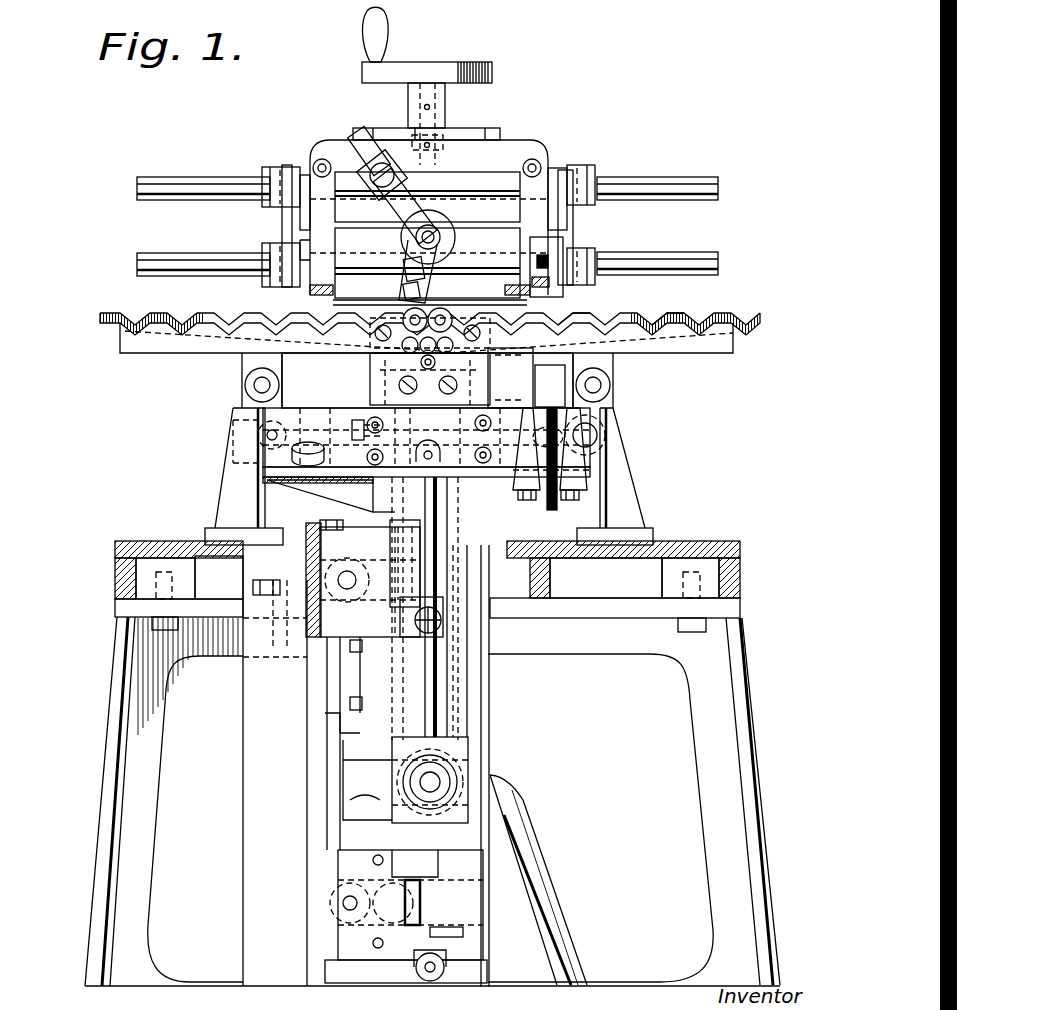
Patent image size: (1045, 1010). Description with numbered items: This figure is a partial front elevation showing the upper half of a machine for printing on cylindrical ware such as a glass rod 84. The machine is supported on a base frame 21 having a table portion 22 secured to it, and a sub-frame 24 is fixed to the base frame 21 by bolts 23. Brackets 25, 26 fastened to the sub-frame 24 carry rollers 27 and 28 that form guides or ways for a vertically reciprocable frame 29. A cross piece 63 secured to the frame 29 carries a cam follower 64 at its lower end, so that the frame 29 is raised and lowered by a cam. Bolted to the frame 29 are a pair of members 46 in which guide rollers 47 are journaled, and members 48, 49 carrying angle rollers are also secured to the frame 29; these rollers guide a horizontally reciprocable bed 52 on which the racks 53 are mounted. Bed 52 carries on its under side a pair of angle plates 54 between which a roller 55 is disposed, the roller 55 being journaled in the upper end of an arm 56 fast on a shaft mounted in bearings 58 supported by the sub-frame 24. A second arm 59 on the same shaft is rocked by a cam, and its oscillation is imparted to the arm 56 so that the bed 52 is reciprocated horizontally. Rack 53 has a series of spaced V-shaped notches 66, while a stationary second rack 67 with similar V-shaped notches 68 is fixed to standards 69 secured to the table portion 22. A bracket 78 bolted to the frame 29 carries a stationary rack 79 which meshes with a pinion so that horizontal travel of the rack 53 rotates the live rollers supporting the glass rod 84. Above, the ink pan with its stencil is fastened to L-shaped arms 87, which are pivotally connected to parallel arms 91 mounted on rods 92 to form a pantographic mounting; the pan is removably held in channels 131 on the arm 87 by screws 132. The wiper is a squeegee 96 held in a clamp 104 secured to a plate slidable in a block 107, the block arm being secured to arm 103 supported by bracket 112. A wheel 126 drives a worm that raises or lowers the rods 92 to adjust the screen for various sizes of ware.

The base frame 21 is at (755, 714).
The table portion 22 is at (712, 545).
The bolts 23 is at (278, 590).
The sub-frame 24 is at (248, 920).
The bracket 25 is at (347, 635).
The bracket 26 is at (333, 940).
The roller 27 is at (340, 592).
The roller 28 is at (420, 907).
The vertically reciprocable frame 29 is at (488, 707).
The members 46 is at (263, 458).
The guide rollers 47 is at (258, 434).
The member 48 is at (537, 503).
The member 49 is at (300, 476).
The horizontally reciprocable bed 52 is at (607, 417).
The rack 53 is at (758, 320).
The angle plates 54 is at (357, 428).
The roller 55 is at (318, 483).
The arm 56 is at (443, 643).
The bearings 58 is at (468, 750).
The second arm 59 is at (542, 878).
The cross piece 63 is at (463, 932).
The cam follower 64 is at (452, 967).
The V-shaped notches 66 is at (665, 320).
The second rack 67 is at (740, 342).
The V-shaped notches 68 is at (572, 320).
The standards 69 is at (228, 497).
The bracket 78 is at (560, 383).
The stationary rack 79 is at (523, 368).
The glass rod 84 is at (455, 300).
The L-shaped arms 87 is at (287, 216).
The parallel arms 91 is at (272, 180).
The rods 92 is at (676, 191).
The squeegee 96 is at (402, 318).
The arm 103 is at (410, 196).
The clamp 104 is at (407, 290).
The block 107 is at (429, 211).
The bracket 112 is at (442, 265).
The wheel 126 is at (492, 76).
The channels 131 is at (553, 300).
The screws 132 is at (548, 262).